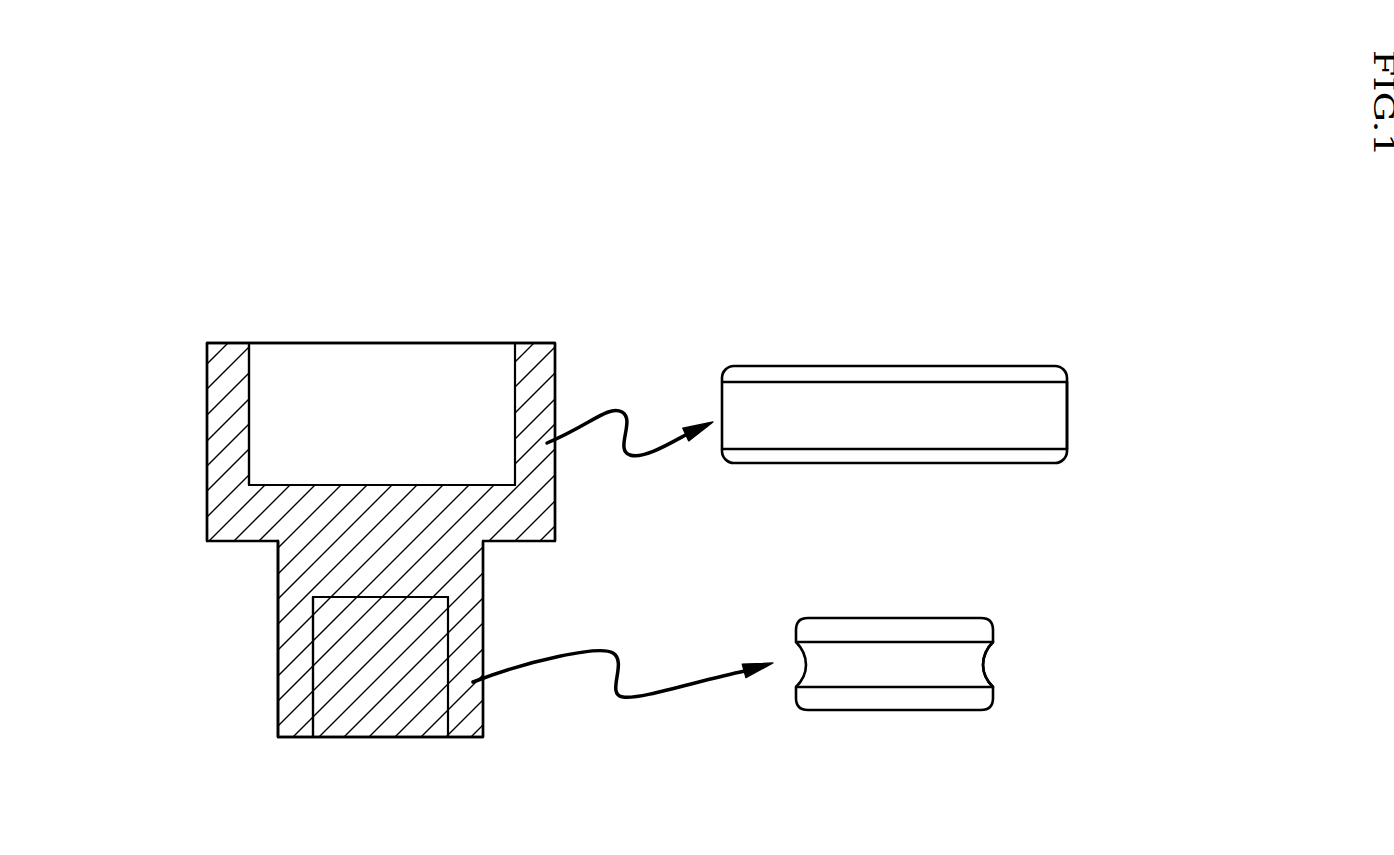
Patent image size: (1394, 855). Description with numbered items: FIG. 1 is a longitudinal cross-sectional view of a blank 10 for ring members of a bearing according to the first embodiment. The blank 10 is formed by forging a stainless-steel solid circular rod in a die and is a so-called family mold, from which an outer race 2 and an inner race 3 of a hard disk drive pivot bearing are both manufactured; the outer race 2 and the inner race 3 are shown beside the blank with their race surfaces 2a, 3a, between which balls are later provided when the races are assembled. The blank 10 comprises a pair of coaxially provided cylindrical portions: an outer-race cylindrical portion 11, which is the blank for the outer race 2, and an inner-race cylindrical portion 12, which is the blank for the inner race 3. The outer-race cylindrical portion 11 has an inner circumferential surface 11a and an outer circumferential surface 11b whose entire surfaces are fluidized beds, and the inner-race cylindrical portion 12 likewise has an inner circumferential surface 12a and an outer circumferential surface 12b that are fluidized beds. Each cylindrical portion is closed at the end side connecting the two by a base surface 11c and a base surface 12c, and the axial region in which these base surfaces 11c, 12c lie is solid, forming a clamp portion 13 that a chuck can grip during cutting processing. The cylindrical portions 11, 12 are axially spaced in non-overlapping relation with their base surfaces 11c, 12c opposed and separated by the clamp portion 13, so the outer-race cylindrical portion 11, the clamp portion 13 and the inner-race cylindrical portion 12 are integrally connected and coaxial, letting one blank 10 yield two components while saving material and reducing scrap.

The blank 10 is at (403, 300).
The outer-race cylindrical portion 11 is at (558, 365).
The inner circumferential surface 11a is at (249, 408).
The outer circumferential surface 11b is at (207, 390).
The base surface 11c is at (410, 485).
The inner-race cylindrical portion 12 is at (487, 720).
The inner circumferential surface 12a is at (313, 710).
The outer circumferential surface 12b is at (278, 700).
The base surface 12c is at (402, 598).
The clamp portion 13 is at (460, 565).
The outer race 2 is at (1060, 367).
The race surface 2a is at (1043, 417).
The inner race 3 is at (993, 705).
The race surface 3a is at (960, 665).